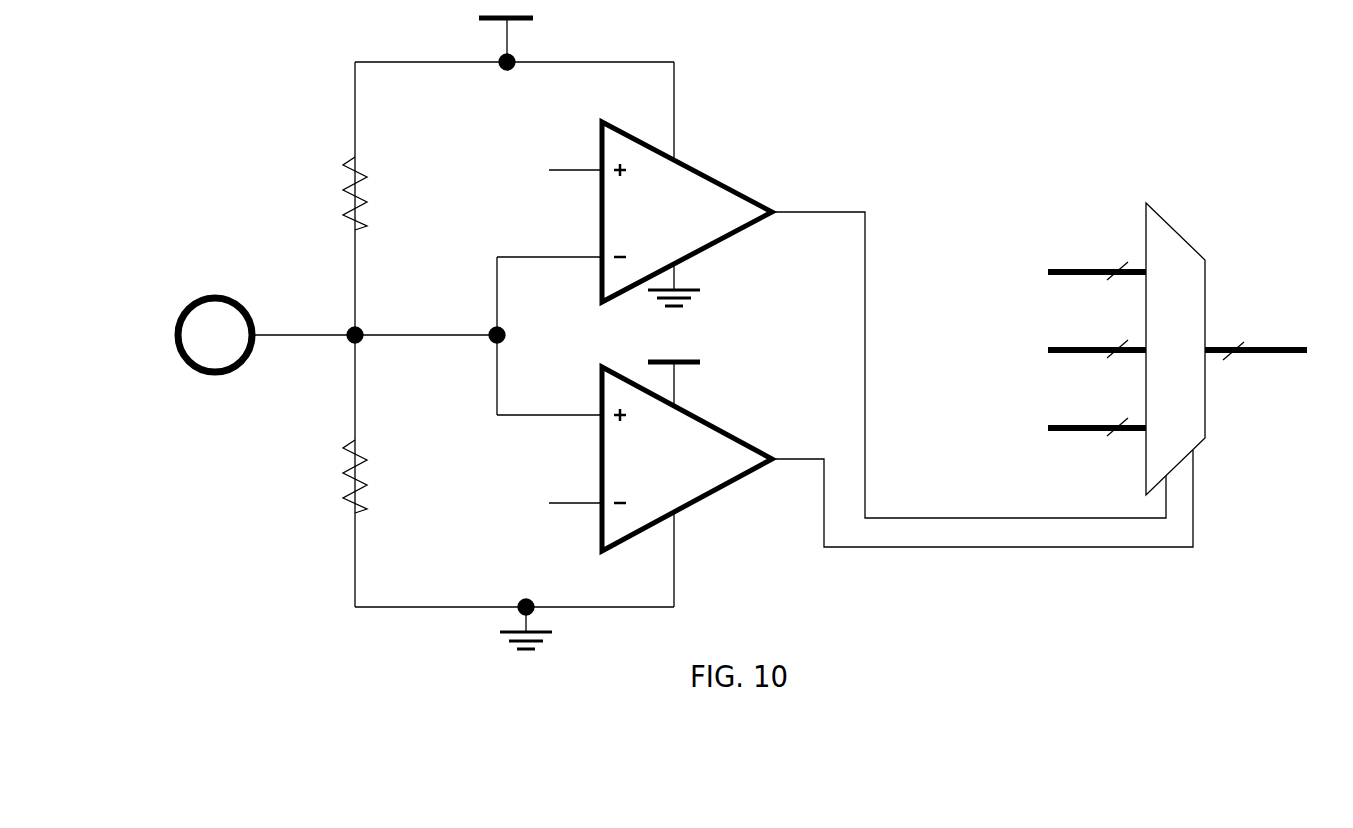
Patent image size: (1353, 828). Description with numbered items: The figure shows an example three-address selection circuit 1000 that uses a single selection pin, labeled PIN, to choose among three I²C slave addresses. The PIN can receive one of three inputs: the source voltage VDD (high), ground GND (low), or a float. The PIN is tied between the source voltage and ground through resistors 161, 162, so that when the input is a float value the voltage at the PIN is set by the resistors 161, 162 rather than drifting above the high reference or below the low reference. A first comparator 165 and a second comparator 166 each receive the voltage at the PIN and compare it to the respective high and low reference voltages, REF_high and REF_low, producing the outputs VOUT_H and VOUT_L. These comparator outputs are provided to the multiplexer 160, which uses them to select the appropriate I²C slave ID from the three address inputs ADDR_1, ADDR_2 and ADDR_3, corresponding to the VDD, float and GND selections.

The three-address selection circuit 1000 is at (748, 332).
The resistor 161 is at (364, 229).
The resistor 162 is at (364, 510).
The first comparator 165 is at (703, 246).
The second comparator 166 is at (698, 497).
The multiplexer (MUX) 160 is at (1198, 445).